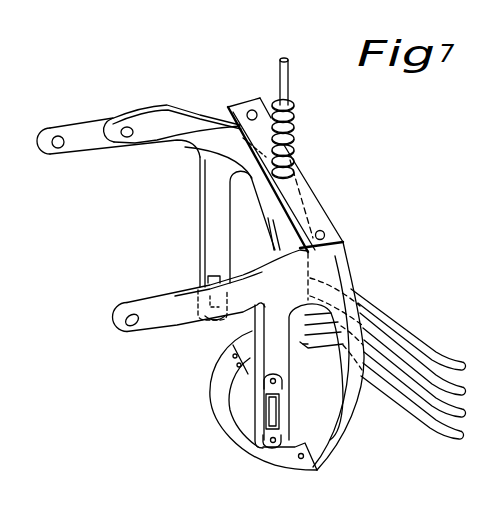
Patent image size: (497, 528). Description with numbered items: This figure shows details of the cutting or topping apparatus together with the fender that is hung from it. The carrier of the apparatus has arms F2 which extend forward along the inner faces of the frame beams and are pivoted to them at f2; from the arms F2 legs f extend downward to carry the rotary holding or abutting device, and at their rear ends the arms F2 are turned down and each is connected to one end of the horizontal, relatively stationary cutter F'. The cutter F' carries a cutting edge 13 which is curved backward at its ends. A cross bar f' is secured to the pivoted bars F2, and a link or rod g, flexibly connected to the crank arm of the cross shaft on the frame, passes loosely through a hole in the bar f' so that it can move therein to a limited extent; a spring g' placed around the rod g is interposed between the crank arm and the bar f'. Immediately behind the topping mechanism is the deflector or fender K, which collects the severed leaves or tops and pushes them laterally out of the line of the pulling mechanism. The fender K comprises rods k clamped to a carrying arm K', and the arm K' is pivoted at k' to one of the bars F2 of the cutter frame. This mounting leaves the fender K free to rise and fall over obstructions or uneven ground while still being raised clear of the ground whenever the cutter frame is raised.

The arms F2 is at (168, 106).
The pivot f2 is at (62, 138).
The pivot k' is at (172, 99).
The carrying arm K' is at (250, 151).
The legs f is at (239, 302).
The cross bar f' is at (286, 199).
The link or rod g is at (303, 77).
The spring g' is at (308, 131).
The deflector or fender K is at (331, 356).
The rods k is at (408, 364).
The cutter F' is at (226, 428).
The cutting edge 13 is at (213, 415).